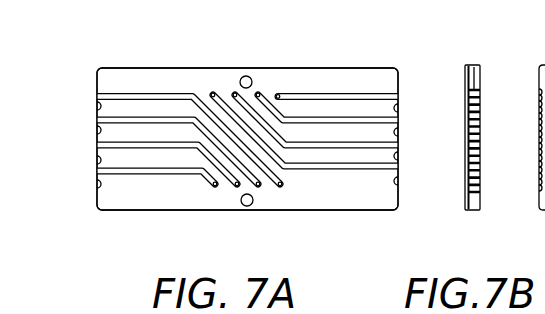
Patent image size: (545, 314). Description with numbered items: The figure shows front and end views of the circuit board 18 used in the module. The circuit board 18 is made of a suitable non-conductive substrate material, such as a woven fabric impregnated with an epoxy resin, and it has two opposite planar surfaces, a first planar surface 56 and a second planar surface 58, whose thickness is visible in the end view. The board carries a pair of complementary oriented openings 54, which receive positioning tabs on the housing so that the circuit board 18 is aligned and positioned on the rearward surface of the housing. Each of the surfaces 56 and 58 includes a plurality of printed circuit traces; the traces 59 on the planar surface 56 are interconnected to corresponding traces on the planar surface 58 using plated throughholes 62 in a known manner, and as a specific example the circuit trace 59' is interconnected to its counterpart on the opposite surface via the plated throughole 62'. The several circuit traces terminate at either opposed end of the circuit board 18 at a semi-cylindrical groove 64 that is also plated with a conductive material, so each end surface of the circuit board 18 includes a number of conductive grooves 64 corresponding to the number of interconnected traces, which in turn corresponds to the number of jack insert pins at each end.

In FIG. 7A, the circuit board 18 is at (331, 62).
In FIG. 7B, the circuit board 18 is at (481, 53).
In FIG. 7A, the openings 54 is at (251, 76).
In FIG. 7A, the planar surface 56 is at (349, 78).
In FIG. 7B, the planar surface 56 is at (464, 77).
In FIG. 7B, the planar surface 58 is at (478, 73).
In FIG. 7A, the circuit trace 59 is at (187, 108).
In FIG. 7A, the circuit trace 59' is at (176, 108).
In FIG. 7A, the plated throughole 62 is at (154, 207).
In FIG. 7A, the plated throughole 62' is at (221, 191).
In FIG. 7A, the semi-cylindrical groove 64 is at (99, 165).
In FIG. 7B, the semi-cylindrical groove 64 is at (540, 121).